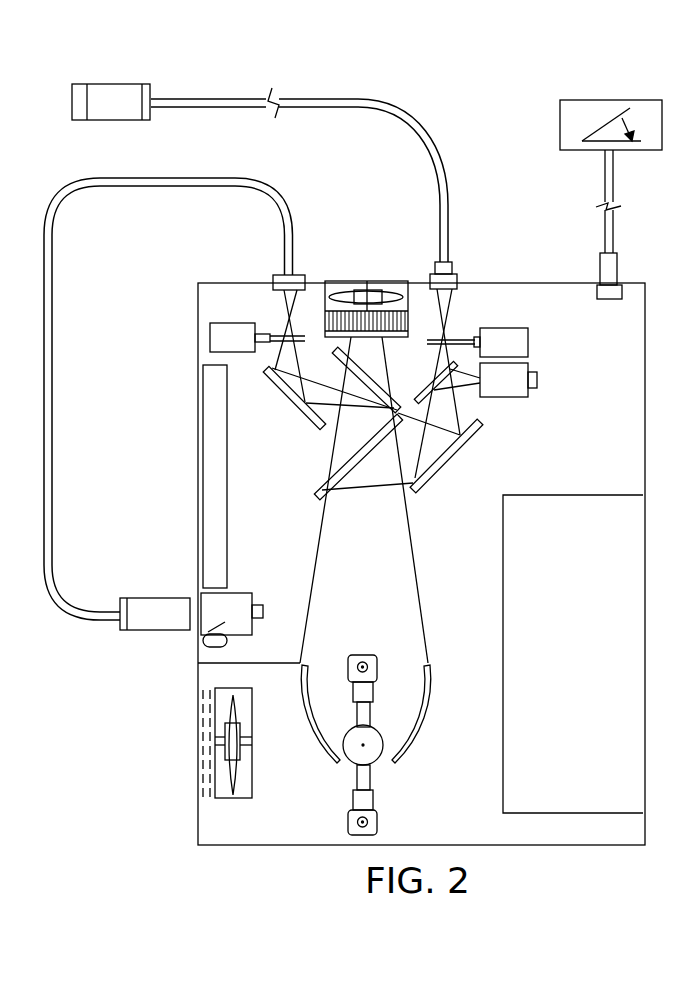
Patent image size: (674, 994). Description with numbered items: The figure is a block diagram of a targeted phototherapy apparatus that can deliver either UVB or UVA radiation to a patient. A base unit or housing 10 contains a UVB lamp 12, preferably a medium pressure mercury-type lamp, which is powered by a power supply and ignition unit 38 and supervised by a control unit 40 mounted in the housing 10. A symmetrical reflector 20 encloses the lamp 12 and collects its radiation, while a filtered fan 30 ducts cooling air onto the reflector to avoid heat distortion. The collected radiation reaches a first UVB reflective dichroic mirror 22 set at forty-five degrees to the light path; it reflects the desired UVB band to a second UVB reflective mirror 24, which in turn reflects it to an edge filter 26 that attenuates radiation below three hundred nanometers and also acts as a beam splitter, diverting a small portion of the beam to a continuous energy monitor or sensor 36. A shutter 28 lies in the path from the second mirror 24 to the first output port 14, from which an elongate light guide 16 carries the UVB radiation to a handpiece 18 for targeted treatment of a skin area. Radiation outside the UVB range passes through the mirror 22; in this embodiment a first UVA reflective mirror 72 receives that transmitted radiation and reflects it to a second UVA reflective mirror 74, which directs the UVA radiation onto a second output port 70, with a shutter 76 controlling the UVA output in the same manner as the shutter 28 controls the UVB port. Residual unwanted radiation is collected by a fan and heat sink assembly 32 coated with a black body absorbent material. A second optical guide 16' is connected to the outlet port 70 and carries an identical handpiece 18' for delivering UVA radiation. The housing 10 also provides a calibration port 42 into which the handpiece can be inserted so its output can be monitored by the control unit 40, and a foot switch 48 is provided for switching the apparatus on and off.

The housing 10 is at (550, 846).
The UVB lamp 12 is at (372, 773).
The output port 14 is at (457, 278).
The light guide 16 is at (320, 175).
The second optical guide 16' is at (168, 399).
The handpiece 18 is at (141, 118).
The handpiece 18' is at (150, 641).
The reflector 20 is at (315, 748).
The first UVB reflective mirror 22 is at (317, 490).
The second UVB reflective mirror 24 is at (460, 453).
The edge filter 26 is at (429, 380).
The shutter 28 is at (497, 328).
The filtered fan 30 is at (198, 738).
The fan and heat sink assembly 32 is at (367, 281).
The energy monitor or sensor 36 is at (537, 385).
The power supply and ignition unit 38 is at (503, 585).
The control unit 40 is at (203, 455).
The calibration port 42 is at (232, 593).
The foot switch 48 is at (607, 100).
The second output port 70 is at (293, 275).
The first UVA reflective mirror 72 is at (365, 388).
The second UVA reflective mirror 74 is at (303, 411).
The shutter 76 is at (228, 323).